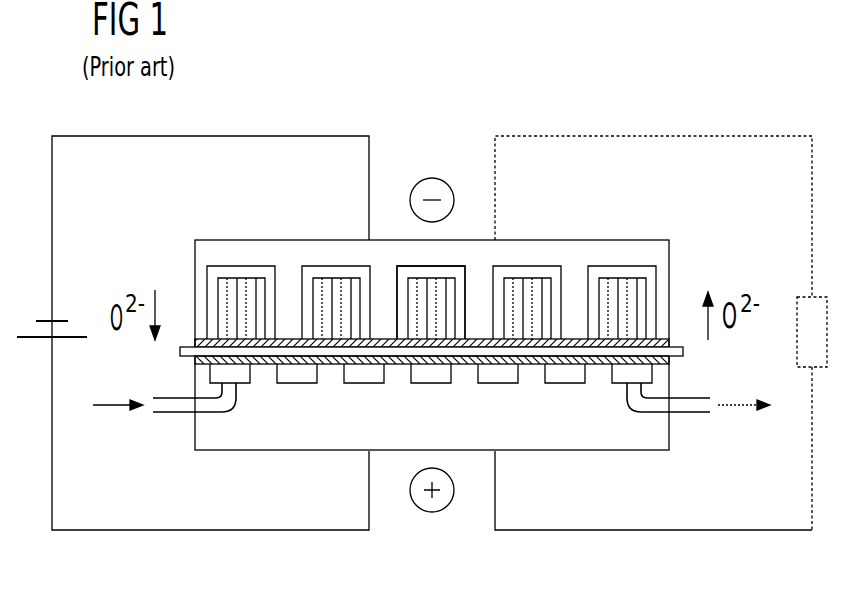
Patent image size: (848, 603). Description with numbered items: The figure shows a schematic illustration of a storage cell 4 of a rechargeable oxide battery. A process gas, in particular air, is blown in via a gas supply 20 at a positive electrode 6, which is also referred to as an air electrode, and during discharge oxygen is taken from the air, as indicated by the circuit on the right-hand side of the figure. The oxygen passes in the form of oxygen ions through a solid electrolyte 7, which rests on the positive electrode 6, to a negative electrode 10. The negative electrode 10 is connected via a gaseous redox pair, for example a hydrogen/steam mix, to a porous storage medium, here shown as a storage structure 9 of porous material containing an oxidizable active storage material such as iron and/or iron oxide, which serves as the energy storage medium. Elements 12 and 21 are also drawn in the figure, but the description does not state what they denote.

The storage cell 4 is at (209, 505).
The positive electrode 6 is at (263, 383).
The solid electrolyte 7 is at (180, 352).
The storage structure 9 is at (527, 288).
The negative electrode 10 is at (282, 339).
The electrode contact 12 is at (456, 266).
The gas supply 20 is at (165, 413).
The electrode segment 21 is at (566, 374).